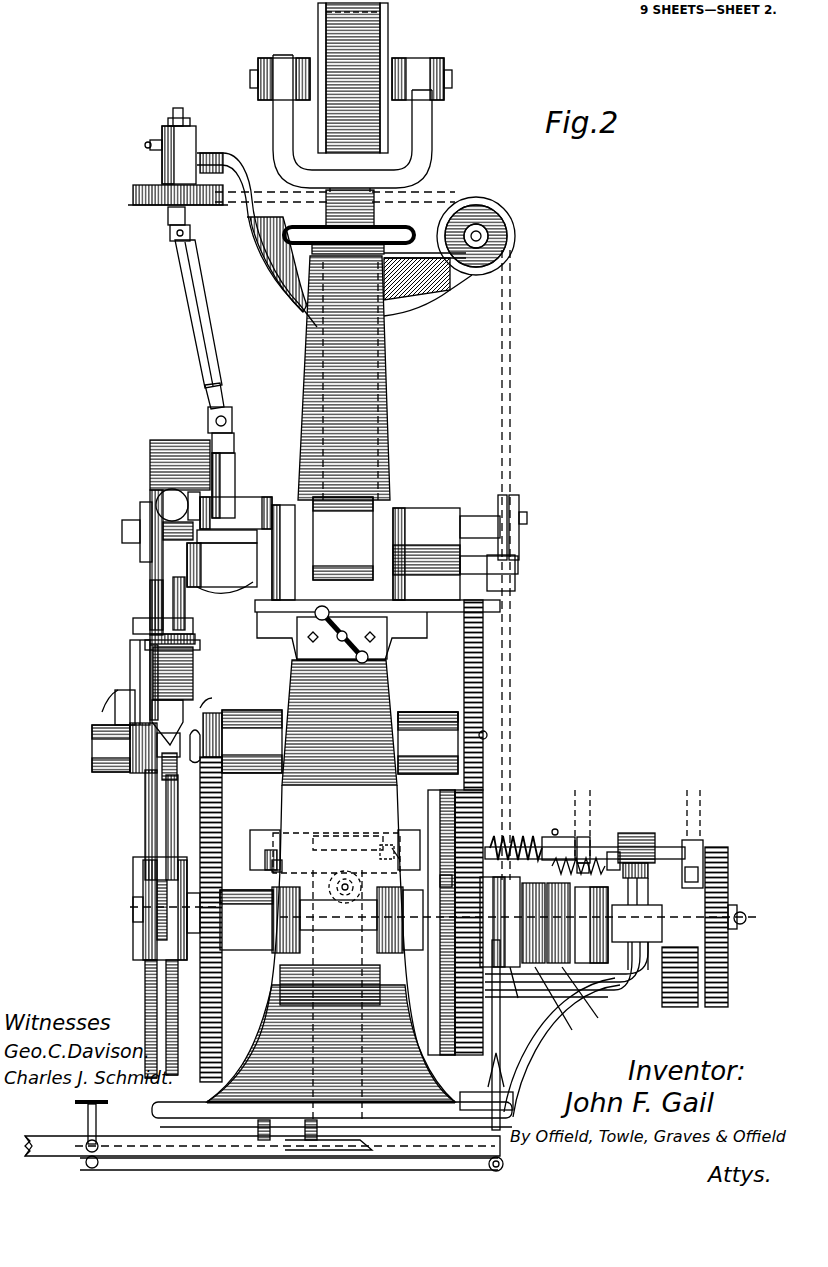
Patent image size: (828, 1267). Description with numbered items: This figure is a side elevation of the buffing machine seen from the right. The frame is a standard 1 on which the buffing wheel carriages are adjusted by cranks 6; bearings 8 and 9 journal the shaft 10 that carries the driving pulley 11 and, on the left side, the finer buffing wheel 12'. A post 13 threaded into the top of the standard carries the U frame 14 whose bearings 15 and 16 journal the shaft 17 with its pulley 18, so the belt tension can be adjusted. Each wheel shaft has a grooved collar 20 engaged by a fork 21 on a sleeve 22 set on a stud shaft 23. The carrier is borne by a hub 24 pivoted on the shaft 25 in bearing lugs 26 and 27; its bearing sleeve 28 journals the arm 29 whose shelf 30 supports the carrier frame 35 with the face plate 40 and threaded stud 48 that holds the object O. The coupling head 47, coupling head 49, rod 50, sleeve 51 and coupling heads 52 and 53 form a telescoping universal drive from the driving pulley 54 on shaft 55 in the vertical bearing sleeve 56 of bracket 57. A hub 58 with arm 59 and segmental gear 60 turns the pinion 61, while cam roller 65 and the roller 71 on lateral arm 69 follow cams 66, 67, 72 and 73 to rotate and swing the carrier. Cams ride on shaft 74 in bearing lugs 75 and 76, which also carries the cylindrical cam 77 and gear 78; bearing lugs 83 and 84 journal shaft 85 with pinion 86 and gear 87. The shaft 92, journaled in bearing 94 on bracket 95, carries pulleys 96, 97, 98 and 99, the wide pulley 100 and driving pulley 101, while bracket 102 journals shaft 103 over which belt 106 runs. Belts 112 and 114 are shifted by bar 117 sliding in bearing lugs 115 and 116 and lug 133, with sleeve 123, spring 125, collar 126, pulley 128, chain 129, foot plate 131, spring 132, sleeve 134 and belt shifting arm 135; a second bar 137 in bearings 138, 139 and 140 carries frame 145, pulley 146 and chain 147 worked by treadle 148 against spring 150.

The standard 1 is at (332, 677).
The crank 6 is at (340, 642).
The bearing 8 is at (283, 552).
The bearing 9 is at (440, 508).
The shaft 10 is at (122, 530).
The driving pulley 11 is at (343, 538).
The finer buffing wheel 12' is at (155, 528).
The post 13 is at (374, 212).
The U frame 14 is at (432, 120).
The bearing 15 is at (272, 52).
The bearing 16 is at (418, 58).
The shaft 17 is at (452, 76).
The pulley 18 is at (388, 18).
The grooved collar 20 is at (507, 505).
The fork 21 is at (519, 520).
The sleeve 22 is at (510, 588).
The stud shaft 23 is at (501, 563).
The hub 24 is at (183, 720).
The shaft 25 is at (92, 750).
The bearing lug 26 is at (252, 741).
The bearing lug 27 is at (428, 743).
The bearing sleeve 28 is at (193, 680).
The arm 29 is at (130, 660).
The supporting shelf 30 is at (222, 565).
The carrier frame 35 is at (213, 603).
The face plate 40 is at (237, 608).
The coupling head 47 is at (234, 443).
The threaded stud 48 is at (165, 497).
The coupling head 49 is at (232, 420).
The rod 50 is at (222, 395).
The sleeve 51 is at (212, 325).
The coupling head 52 is at (190, 233).
The coupling head 53 is at (168, 220).
The driving pulley 54 is at (135, 190).
The shaft 55 is at (178, 108).
The vertical bearing sleeve 56 is at (194, 130).
The bracket 57 is at (252, 152).
The hub 58 is at (108, 704).
The arm 59 is at (150, 690).
The segmental gear 60 is at (133, 626).
The pinion 61 is at (150, 590).
The cam roller 65 is at (145, 790).
The cam 66 is at (150, 1080).
The cam 67 is at (145, 990).
The lateral arm 69 is at (202, 746).
The cam roller 71 is at (166, 805).
The cam 72 is at (172, 1078).
The cam 73 is at (182, 1017).
The shaft 74 is at (133, 910).
The bearing lug 75 is at (250, 935).
The bearing lug 76 is at (380, 945).
The cylindrical cam 77 is at (485, 820).
The gear 78 is at (216, 919).
The bearing lug 83 is at (222, 720).
The bearing lug 84 is at (425, 712).
The shaft 85 is at (487, 735).
The pinion 86 is at (238, 700).
The gear 87 is at (464, 662).
The shaft 92 is at (737, 918).
The bearing 94 is at (637, 937).
The bracket 95 is at (540, 1050).
The pulley 96 is at (518, 1003).
The pulley 97 is at (557, 1006).
The pulley 98 is at (588, 1002).
The pulley 99 is at (640, 992).
The wide pulley 100 is at (680, 988).
The driving pulley 101 is at (728, 860).
The bracket 102 is at (455, 295).
The shaft 103 is at (482, 232).
The belt 106 is at (511, 345).
The belt 112 is at (581, 790).
The belt 114 is at (697, 803).
The bearing lug 115 is at (262, 830).
The bearing lug 116 is at (410, 826).
The bar 117 is at (587, 852).
The sleeve 123 is at (558, 835).
The spring 125 is at (566, 847).
The collar 126 is at (500, 846).
The pulley 128 is at (336, 857).
The chain 129 is at (307, 1012).
The foot plate 131 is at (80, 1130).
The spring 132 is at (269, 1129).
The bearing lug 133 is at (614, 852).
The sleeve 134 is at (703, 845).
The belt shifting arm 135 is at (693, 884).
The bar 137 is at (265, 862).
The bearing 138 is at (277, 866).
The bearing 139 is at (400, 848).
The bearing 140 is at (645, 836).
The frame 145 is at (380, 848).
The pulley 146 is at (361, 885).
The chain 147 is at (330, 985).
The treadle 148 is at (376, 1146).
The spring 150 is at (590, 835).
The object O is at (140, 512).